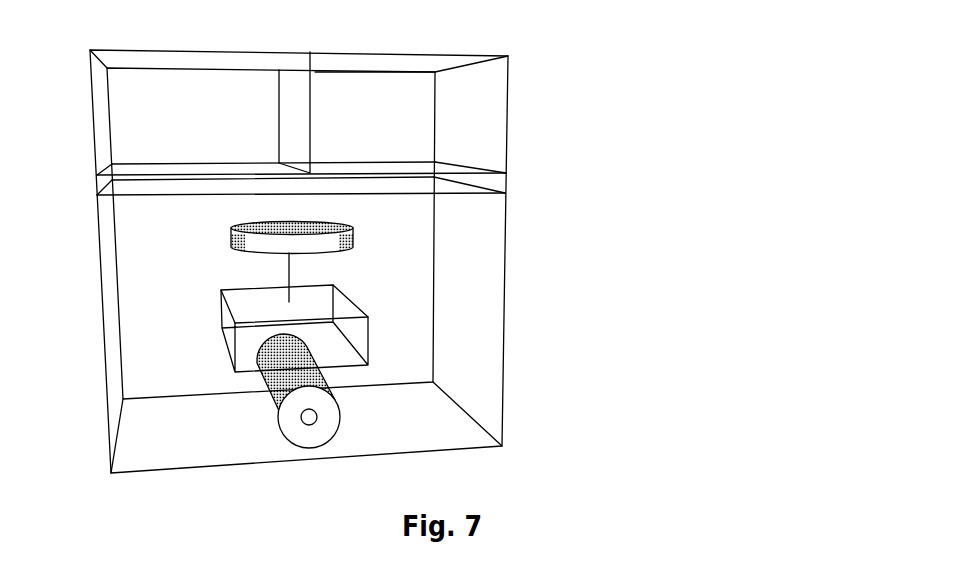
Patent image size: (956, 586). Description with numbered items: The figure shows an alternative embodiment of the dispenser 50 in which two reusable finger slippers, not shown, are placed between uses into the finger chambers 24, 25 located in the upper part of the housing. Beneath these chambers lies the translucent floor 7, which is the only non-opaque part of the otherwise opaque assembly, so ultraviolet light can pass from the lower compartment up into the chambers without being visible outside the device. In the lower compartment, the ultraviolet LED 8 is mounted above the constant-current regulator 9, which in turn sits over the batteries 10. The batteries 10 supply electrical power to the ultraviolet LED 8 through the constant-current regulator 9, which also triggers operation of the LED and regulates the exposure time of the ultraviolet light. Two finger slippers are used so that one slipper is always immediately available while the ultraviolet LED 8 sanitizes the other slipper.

The dispenser 50 is at (591, 215).
The translucent floor 7 is at (490, 182).
The finger chamber 24 is at (163, 107).
The finger chamber 25 is at (415, 111).
The ultraviolet LED 8 is at (317, 243).
The constant-current regulator 9 is at (343, 347).
The batteries 10 is at (273, 413).